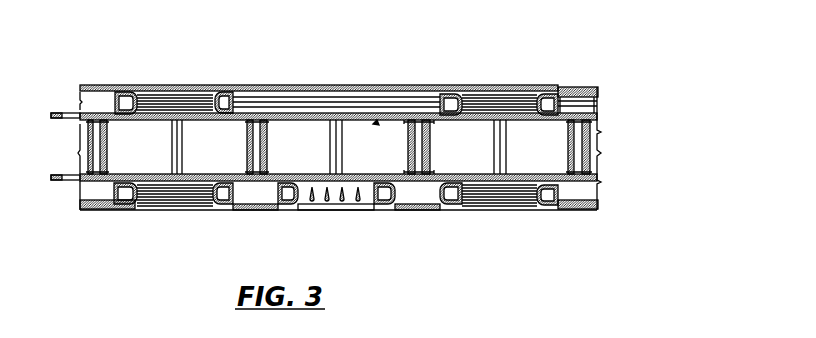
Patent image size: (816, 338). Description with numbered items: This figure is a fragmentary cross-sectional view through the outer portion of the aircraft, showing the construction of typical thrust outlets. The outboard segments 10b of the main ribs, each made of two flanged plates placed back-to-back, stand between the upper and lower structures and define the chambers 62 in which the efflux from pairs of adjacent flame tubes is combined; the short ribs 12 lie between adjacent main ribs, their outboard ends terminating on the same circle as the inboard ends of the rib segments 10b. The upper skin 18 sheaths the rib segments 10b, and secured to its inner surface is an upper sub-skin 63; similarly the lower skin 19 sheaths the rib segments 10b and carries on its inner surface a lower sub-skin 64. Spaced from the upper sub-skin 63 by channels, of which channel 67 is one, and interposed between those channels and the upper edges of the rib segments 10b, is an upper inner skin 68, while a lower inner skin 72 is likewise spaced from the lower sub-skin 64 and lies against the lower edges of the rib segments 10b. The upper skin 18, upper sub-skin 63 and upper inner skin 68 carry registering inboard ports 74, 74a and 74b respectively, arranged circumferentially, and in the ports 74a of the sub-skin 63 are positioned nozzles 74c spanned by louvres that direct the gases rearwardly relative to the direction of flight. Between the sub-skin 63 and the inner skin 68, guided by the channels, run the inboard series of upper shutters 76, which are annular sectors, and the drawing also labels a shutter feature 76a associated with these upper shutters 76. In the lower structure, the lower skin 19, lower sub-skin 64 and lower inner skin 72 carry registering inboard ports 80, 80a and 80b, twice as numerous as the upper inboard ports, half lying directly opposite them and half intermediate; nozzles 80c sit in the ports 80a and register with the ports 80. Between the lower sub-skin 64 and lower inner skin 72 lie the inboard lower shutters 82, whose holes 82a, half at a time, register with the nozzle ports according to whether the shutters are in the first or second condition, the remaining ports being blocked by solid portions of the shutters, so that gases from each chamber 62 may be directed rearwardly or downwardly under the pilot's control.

The outboard segment of main rib 10b is at (451, 149).
The short rib 12 is at (172, 148).
The upper skin 18 is at (278, 88).
The lower skin 19 is at (254, 212).
The chamber 62 is at (352, 130).
The upper sub-skin 63 is at (304, 98).
The lower sub-skin 64 is at (276, 208).
The channel 67 is at (581, 112).
The upper inner skin 68 is at (377, 122).
The lower inner skin 72 is at (392, 176).
The inboard port 74 is at (139, 85).
The inboard port 74a is at (170, 94).
The inboard port 74b is at (550, 47).
The nozzle 74c is at (219, 92).
The upper shutter 76 is at (58, 112).
The top hook 76a is at (428, 116).
The inboard port 80 is at (137, 210).
The inboard port 80a is at (157, 200).
The inboard port 80b is at (502, 251).
The nozzle 80c is at (214, 193).
The lower shutter 82 is at (57, 181).
The hole 82a is at (422, 182).